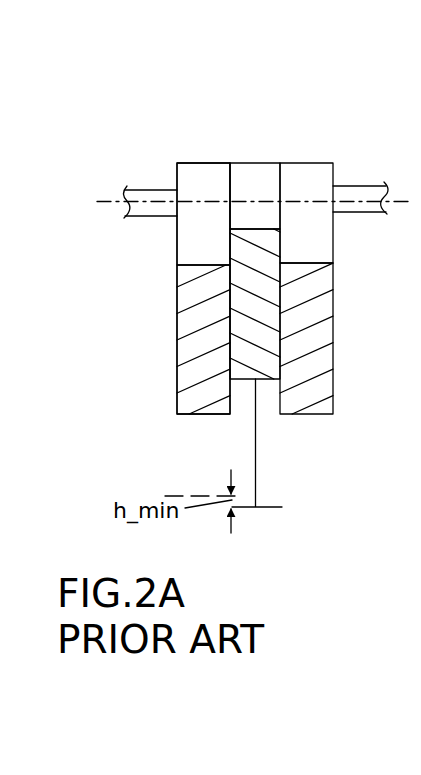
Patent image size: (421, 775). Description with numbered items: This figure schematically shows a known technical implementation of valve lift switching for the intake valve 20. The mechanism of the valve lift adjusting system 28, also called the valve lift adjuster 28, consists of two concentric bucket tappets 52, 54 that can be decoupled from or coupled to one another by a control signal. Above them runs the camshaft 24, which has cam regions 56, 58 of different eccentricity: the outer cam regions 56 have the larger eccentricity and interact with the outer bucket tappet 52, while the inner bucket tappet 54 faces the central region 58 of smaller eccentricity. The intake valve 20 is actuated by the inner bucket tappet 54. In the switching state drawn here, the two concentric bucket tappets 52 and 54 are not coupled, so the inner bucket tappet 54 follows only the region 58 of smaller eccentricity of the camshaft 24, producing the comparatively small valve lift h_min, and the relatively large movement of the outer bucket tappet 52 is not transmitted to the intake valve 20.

The intake valve 20 is at (256, 490).
The camshaft 24 is at (288, 138).
The valve lift adjusting system 28 is at (165, 303).
The outer bucket tappet 52 is at (195, 417).
The inner bucket tappet 54 is at (260, 380).
The outer cam regions 56 is at (204, 163).
The cam region of smaller eccentricity 58 is at (256, 163).